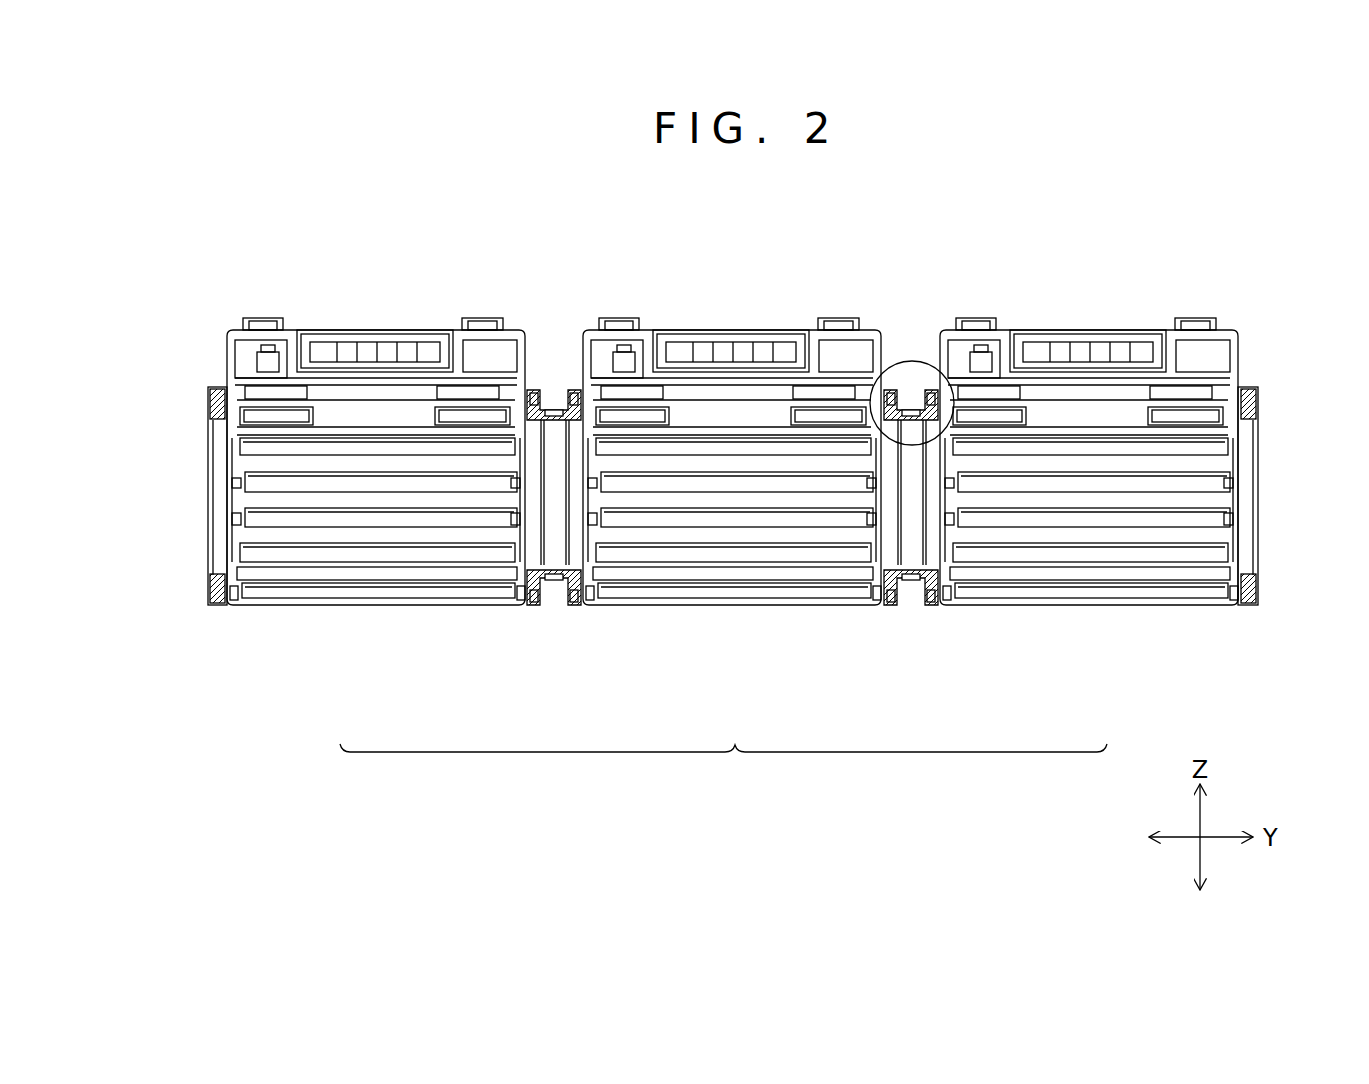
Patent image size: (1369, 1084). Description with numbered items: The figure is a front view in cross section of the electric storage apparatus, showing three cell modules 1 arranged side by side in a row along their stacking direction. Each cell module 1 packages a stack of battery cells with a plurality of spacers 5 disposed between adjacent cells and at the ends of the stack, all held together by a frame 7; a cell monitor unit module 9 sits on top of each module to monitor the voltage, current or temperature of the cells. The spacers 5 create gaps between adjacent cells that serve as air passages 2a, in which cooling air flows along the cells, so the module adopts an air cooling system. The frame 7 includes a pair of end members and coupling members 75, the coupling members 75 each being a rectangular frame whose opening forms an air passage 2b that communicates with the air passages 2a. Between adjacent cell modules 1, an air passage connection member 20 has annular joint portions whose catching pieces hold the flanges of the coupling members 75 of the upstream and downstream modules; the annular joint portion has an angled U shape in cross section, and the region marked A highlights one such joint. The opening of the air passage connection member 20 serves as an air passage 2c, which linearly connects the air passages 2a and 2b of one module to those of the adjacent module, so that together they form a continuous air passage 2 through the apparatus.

The cell module 1 is at (369, 294).
The continuous air passage 2 is at (723, 764).
The air passage 2a is at (376, 536).
The air passage 2b is at (535, 549).
The air passage 2c is at (553, 549).
The spacer 5 is at (301, 583).
The frame 7 is at (206, 493).
The coupling member 75 is at (536, 612).
The cell monitor unit module 9 is at (430, 325).
The air passage connection member 20 is at (553, 393).
The detail region A is at (912, 360).